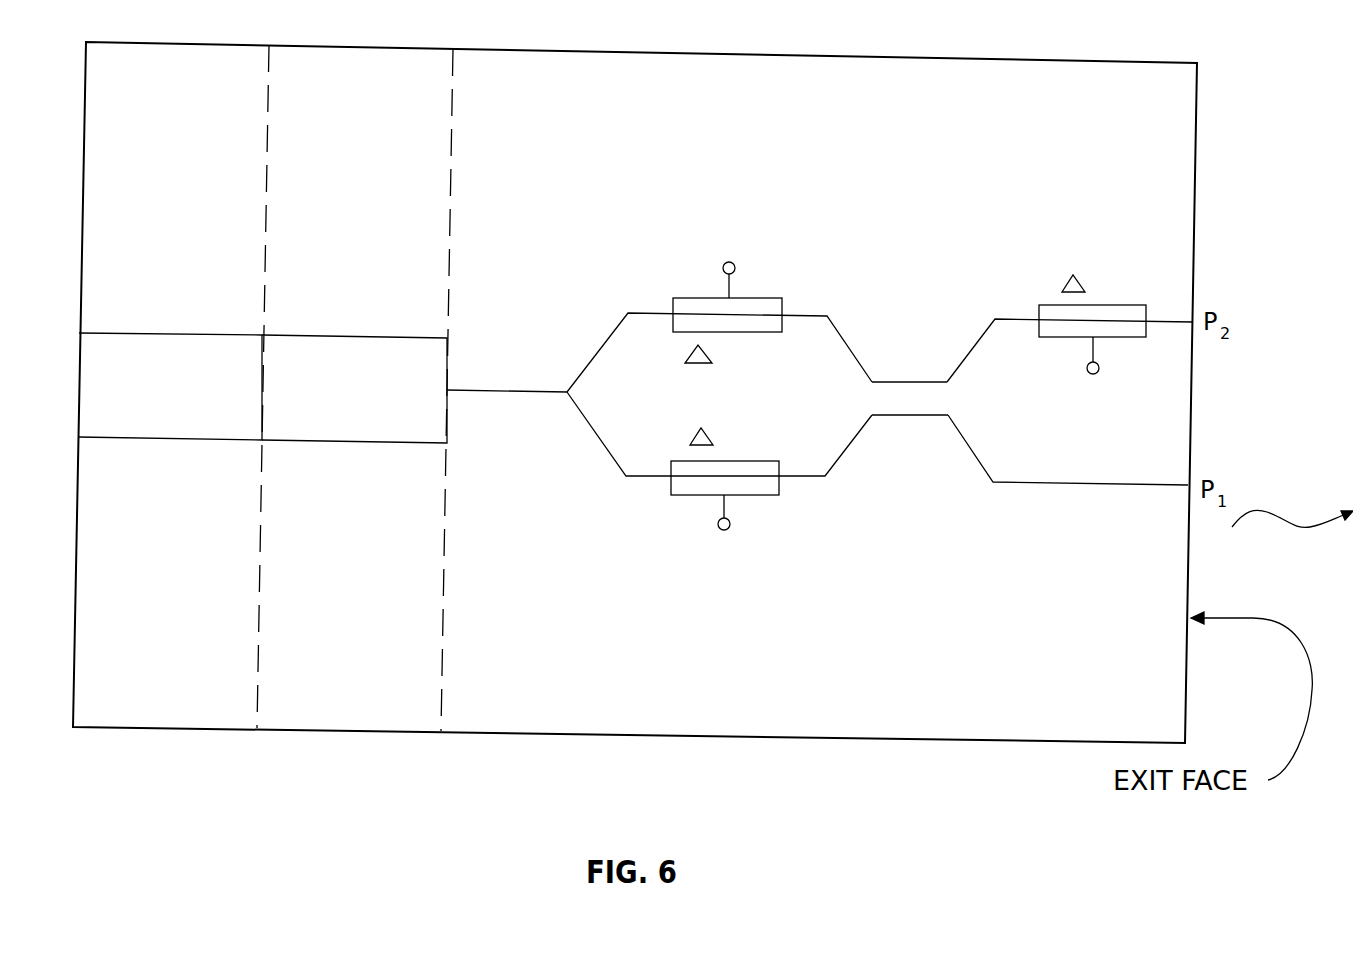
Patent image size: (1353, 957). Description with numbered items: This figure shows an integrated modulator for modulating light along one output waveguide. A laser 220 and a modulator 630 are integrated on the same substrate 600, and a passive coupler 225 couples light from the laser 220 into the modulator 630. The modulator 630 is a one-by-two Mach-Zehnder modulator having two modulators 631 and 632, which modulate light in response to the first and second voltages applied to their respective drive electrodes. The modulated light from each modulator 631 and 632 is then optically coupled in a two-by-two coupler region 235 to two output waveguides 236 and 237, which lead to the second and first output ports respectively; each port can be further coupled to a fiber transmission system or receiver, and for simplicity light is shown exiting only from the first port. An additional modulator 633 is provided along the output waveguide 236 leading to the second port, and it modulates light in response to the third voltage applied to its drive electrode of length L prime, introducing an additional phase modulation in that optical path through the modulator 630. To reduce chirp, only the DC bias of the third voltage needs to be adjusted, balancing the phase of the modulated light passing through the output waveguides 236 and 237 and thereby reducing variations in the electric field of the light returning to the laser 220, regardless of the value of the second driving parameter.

The substrate 600 is at (212, 729).
The modulator 630 is at (1158, 147).
The laser 220 is at (180, 443).
The passive coupler 225 is at (357, 445).
The 2×2 coupler region 235 is at (903, 382).
The output waveguide 236 is at (982, 343).
The output waveguide 237 is at (1012, 483).
The modulator 631 is at (675, 310).
The modulator 632 is at (672, 483).
The additional modulator 633 is at (1038, 317).